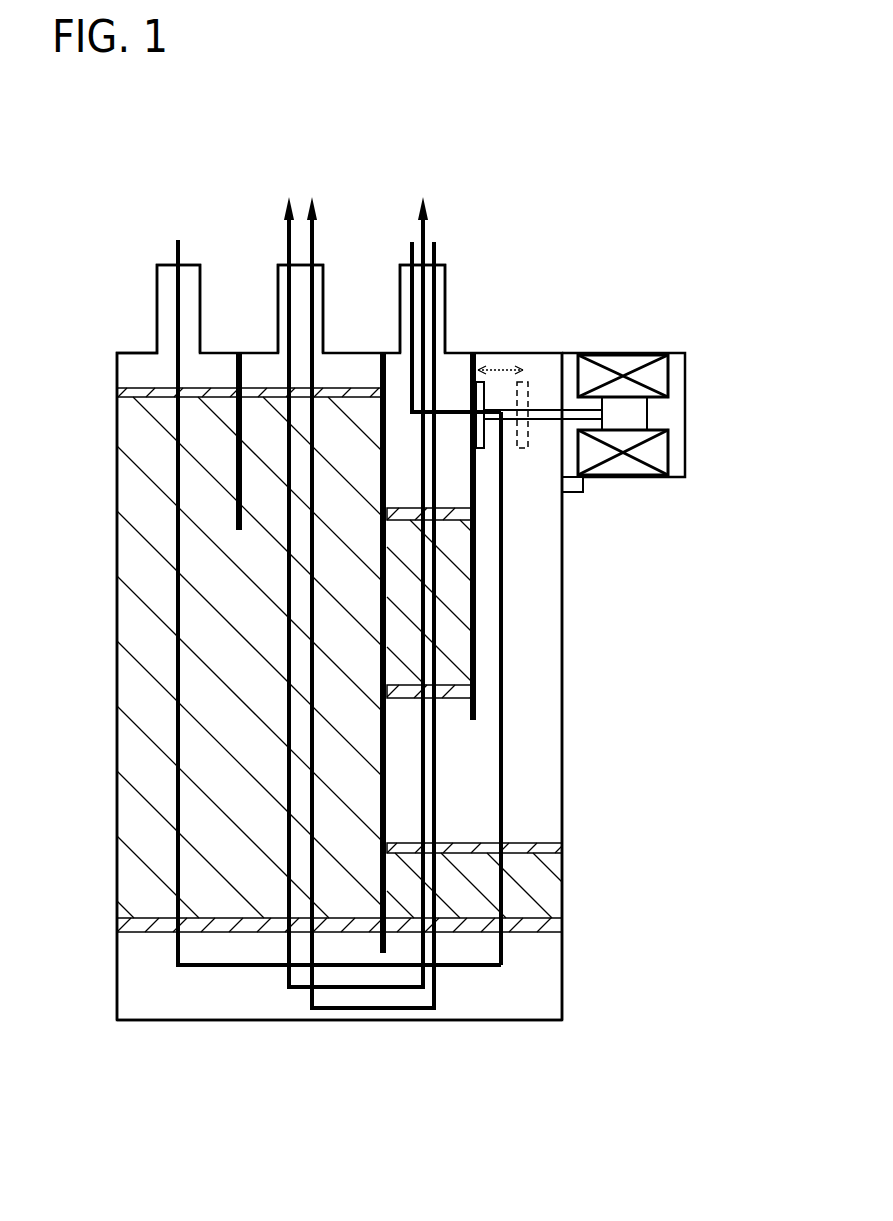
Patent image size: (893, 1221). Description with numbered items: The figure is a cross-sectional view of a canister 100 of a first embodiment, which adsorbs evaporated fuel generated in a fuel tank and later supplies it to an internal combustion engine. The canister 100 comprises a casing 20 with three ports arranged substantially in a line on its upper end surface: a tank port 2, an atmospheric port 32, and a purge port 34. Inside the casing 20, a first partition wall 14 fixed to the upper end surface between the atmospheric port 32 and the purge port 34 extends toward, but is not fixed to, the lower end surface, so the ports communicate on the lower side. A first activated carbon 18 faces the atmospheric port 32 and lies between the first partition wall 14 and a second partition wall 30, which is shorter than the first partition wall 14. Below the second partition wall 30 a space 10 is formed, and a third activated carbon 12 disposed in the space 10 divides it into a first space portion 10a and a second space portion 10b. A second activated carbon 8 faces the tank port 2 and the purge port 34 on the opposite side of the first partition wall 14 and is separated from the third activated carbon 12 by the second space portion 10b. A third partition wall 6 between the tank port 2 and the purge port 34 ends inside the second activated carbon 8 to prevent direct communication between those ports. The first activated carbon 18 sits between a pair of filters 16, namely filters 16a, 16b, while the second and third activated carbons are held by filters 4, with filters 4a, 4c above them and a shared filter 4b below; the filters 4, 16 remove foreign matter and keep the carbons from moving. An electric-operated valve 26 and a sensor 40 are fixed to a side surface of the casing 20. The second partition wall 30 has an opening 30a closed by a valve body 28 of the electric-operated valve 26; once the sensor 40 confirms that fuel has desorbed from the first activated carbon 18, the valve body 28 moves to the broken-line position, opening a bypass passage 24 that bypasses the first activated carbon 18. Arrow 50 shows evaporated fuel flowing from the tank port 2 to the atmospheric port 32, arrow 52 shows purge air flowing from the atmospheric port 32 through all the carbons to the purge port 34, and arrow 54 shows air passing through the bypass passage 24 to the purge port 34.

The canister 100 is at (689, 275).
The tank port 2 is at (157, 308).
The filters 4 is at (352, 676).
The filter 4a is at (117, 393).
The shared filter 4b is at (565, 930).
The filter 4c is at (565, 848).
The third partition wall 6 is at (236, 478).
The second activated carbon 8 is at (130, 555).
The space 10 is at (416, 734).
The first space portion 10a is at (552, 803).
The second space portion 10b is at (548, 983).
The third activated carbon 12 is at (548, 893).
The first partition wall 14 is at (388, 737).
The filters 16 is at (535, 625).
The filter 16a is at (473, 516).
The filter 16b is at (458, 692).
The first activated carbon 18 is at (457, 648).
The casing 20 is at (565, 636).
The bypass passage 24 is at (550, 592).
The electric-operated valve 26 is at (686, 376).
The valve body 28 is at (486, 434).
The second partition wall 30 is at (473, 385).
The opening 30a is at (472, 398).
The atmospheric port 32 is at (400, 308).
The purge port 34 is at (278, 308).
The sensor 40 is at (584, 485).
The arrow 50 is at (178, 253).
The arrow 52 is at (436, 253).
The arrow 54 is at (412, 253).